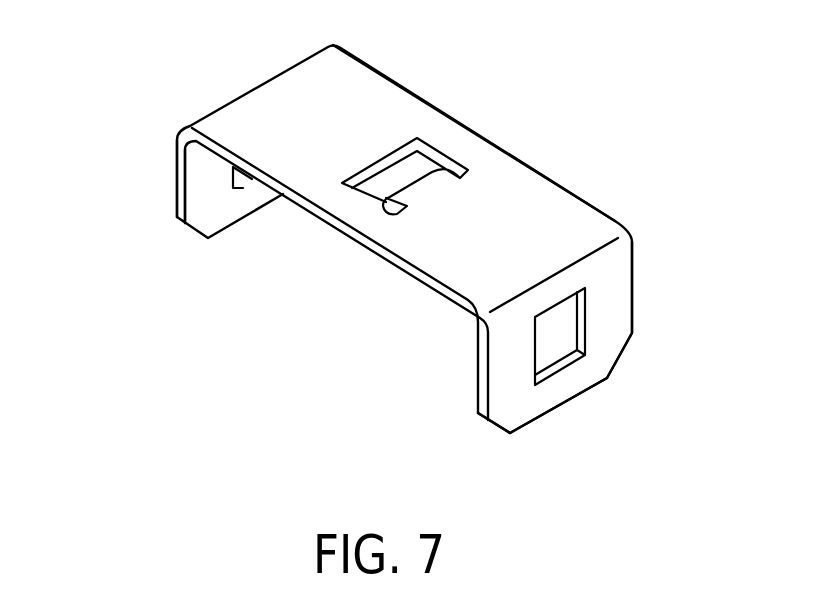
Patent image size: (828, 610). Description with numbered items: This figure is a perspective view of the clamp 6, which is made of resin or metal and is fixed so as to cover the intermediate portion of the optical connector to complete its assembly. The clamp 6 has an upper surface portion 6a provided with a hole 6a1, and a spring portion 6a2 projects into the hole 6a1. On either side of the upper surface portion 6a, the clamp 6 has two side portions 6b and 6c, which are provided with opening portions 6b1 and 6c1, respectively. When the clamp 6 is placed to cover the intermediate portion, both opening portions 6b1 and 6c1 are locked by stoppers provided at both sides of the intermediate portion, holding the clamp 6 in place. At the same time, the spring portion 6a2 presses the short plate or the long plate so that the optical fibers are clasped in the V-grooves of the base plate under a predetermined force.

The clamp 6 is at (392, 228).
The upper surface portion 6a is at (453, 168).
The hole 6a1 is at (390, 178).
The spring portion 6a2 is at (386, 208).
The side portion 6b is at (544, 335).
The opening portion 6b1 is at (553, 336).
The side portion 6c is at (170, 231).
The opening portion 6c1 is at (243, 173).